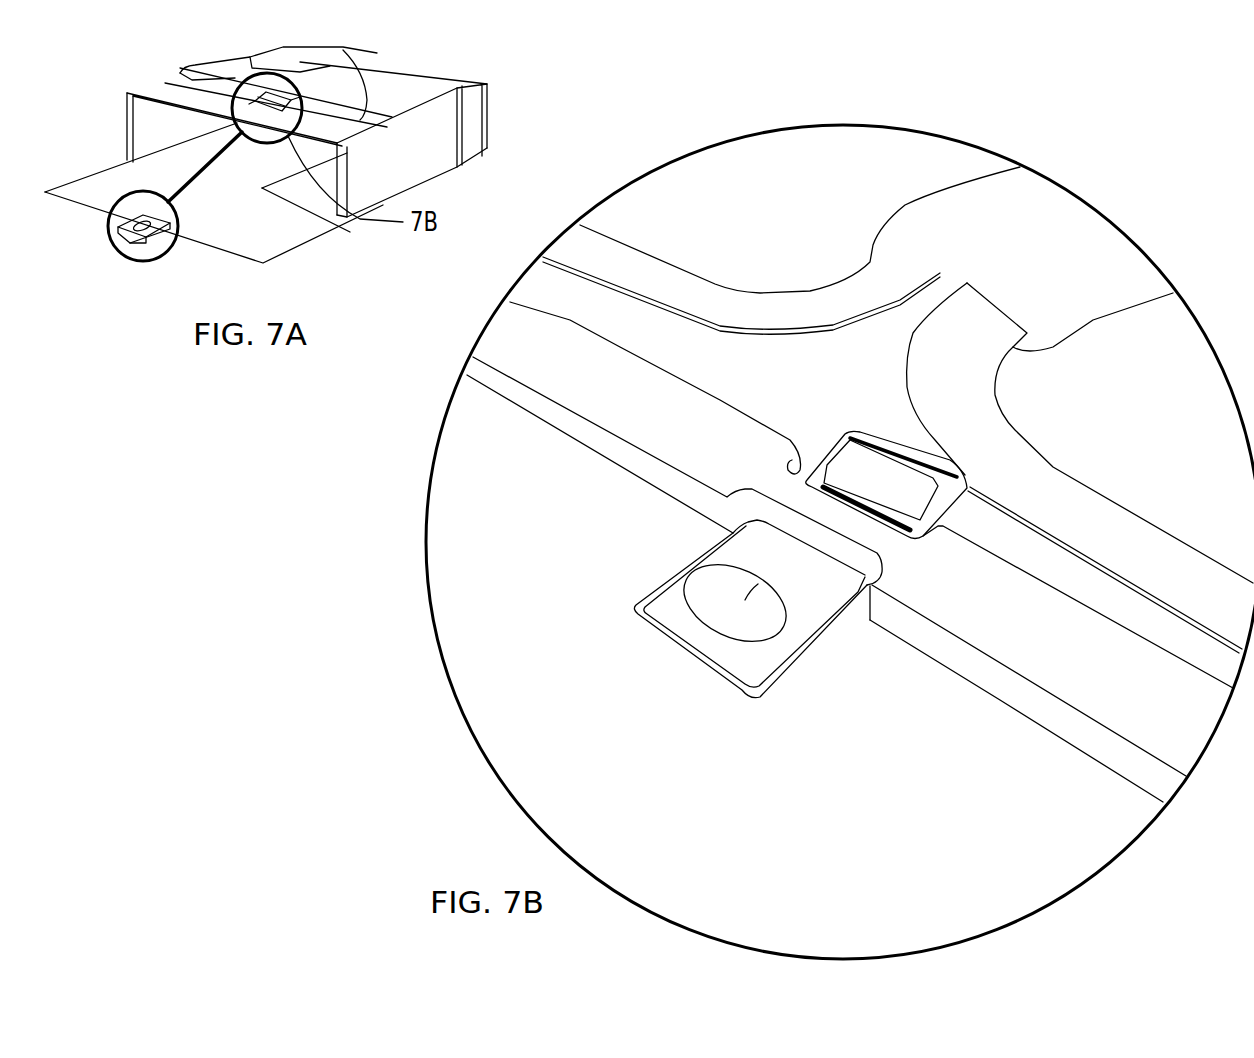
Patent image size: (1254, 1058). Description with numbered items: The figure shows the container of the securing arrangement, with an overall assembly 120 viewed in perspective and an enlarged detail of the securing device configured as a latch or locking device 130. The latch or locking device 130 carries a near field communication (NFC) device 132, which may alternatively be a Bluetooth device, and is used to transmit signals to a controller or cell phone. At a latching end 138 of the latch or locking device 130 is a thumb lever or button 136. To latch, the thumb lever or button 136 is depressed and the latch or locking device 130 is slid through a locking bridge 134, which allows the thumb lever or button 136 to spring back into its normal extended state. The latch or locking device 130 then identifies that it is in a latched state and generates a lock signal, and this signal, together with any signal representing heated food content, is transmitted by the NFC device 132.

In FIG. 7A, the housing assembly 120 is at (502, 110).
In FIG. 7A, the latch or locking device 130 is at (117, 254).
In FIG. 7B, the latch or locking device 130 is at (683, 565).
In FIG. 7A, the near field communication (NFC) device 132 is at (143, 213).
In FIG. 7B, the near field communication (NFC) device 132 is at (808, 589).
In FIG. 7A, the locking bridge 134 is at (278, 102).
In FIG. 7B, the locking bridge 134 is at (800, 493).
In FIG. 7B, the thumb lever or button 136 is at (890, 437).
In FIG. 7B, the latching end 138 is at (980, 500).